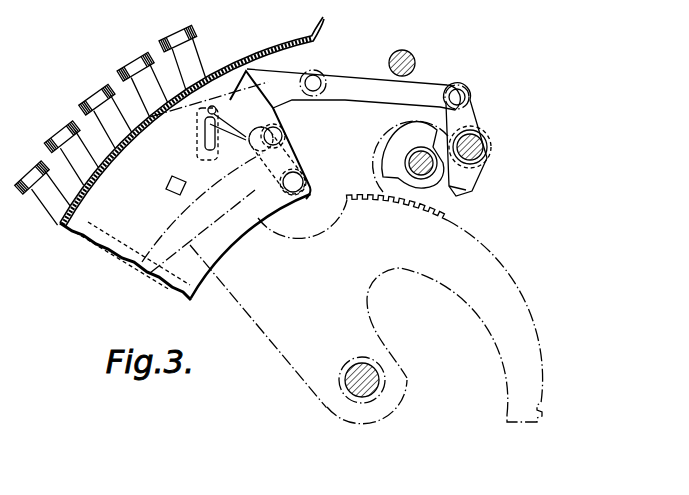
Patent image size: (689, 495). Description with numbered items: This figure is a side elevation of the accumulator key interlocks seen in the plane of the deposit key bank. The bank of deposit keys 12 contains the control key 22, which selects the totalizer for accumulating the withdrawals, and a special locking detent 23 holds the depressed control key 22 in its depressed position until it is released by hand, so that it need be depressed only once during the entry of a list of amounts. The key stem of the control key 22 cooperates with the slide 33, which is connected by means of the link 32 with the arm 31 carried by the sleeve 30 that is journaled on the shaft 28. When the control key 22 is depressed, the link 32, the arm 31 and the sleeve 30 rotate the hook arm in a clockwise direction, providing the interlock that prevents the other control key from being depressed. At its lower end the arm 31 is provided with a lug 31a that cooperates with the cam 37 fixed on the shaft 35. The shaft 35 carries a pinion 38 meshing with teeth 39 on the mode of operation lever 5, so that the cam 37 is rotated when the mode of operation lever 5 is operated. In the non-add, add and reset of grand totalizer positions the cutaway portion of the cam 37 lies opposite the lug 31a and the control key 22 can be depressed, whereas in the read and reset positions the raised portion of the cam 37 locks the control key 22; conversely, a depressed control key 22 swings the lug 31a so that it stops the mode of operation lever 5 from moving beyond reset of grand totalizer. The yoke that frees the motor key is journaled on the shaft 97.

The deposit keys 12 is at (90, 100).
The control key 22 is at (196, 34).
The locking detent 23 is at (172, 180).
The slide 33 is at (196, 146).
The link 32 is at (350, 82).
The shaft 97 is at (407, 55).
The arm 31 is at (470, 110).
The lug 31a is at (463, 191).
The shaft 28 is at (482, 140).
The sleeve 30 is at (487, 152).
The cam 37 is at (390, 143).
The shaft 35 is at (410, 162).
The teeth 39 is at (358, 199).
The pinion 38 is at (443, 208).
The mode of operation lever 5 is at (246, 314).